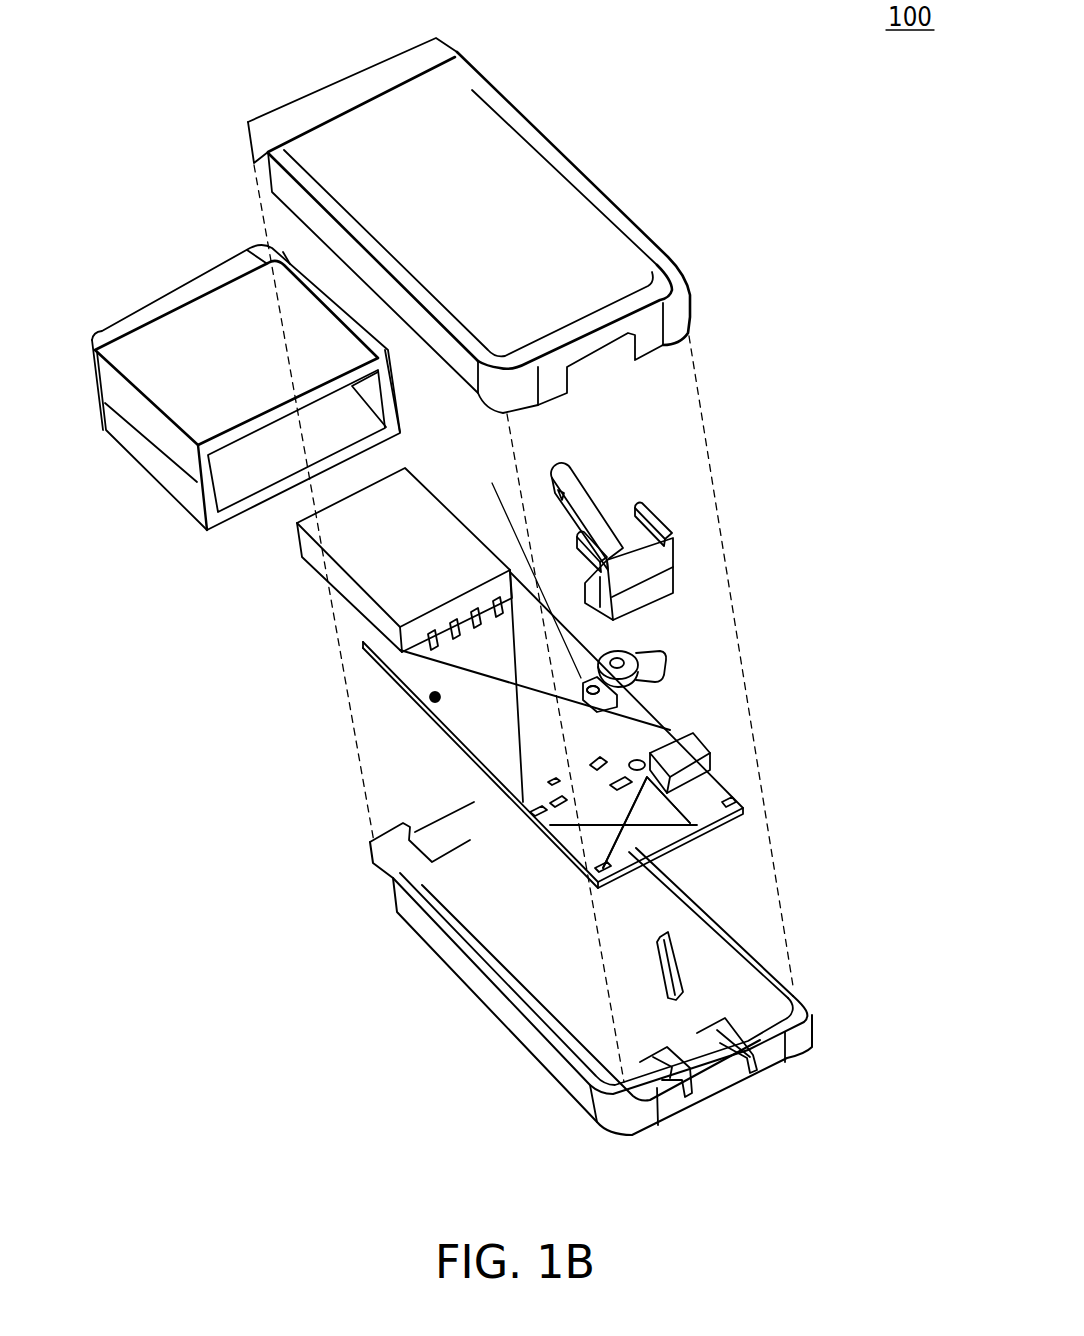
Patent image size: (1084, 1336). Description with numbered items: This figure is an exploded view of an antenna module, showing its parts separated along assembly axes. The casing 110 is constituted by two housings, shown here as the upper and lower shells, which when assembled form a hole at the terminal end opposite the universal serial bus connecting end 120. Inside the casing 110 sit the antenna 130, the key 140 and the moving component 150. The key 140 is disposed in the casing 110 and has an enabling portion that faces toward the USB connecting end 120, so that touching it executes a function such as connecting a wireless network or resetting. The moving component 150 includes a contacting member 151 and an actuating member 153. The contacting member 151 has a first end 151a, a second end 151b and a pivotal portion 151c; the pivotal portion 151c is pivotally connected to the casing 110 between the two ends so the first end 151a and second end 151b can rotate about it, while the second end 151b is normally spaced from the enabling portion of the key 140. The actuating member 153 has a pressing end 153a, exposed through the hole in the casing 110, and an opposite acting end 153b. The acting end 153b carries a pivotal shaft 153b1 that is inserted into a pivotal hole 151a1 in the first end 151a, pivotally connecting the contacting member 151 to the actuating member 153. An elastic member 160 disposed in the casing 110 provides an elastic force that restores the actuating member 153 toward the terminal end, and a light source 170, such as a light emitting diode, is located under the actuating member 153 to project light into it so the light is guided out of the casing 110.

The casing 110 is at (580, 178).
The universal serial bus (USB) connecting end 120 is at (297, 540).
The antenna 130 is at (565, 848).
The key 140 is at (720, 743).
The moving component 150 is at (590, 584).
The contacting member 151 is at (556, 653).
The first end 151a is at (617, 708).
The pivotal hole 151a1 is at (580, 680).
The second end 151b is at (623, 662).
The pivotal portion 151c is at (633, 653).
The actuating member 153 is at (654, 564).
The pressing end 153a is at (672, 581).
The acting end 153b is at (587, 497).
The pivotal shaft 153b1 is at (582, 681).
The elastic member 160 is at (593, 763).
The light source 170 is at (683, 843).